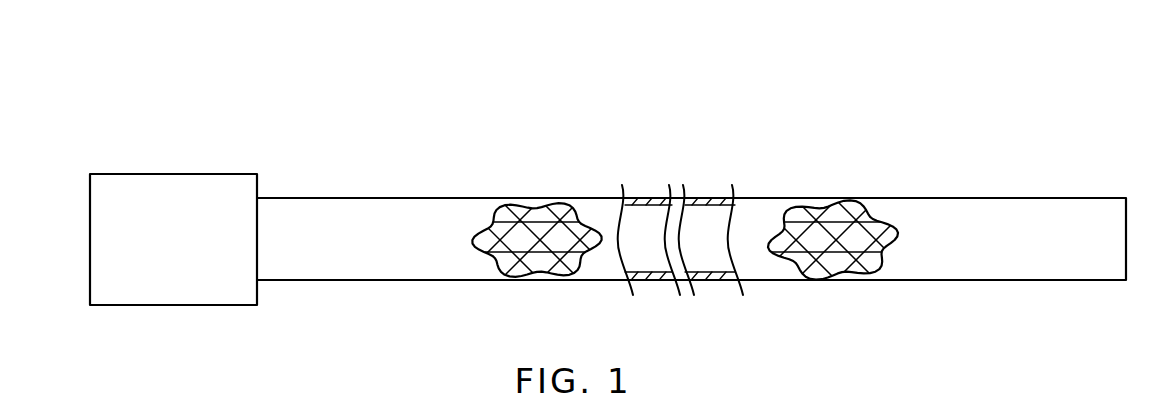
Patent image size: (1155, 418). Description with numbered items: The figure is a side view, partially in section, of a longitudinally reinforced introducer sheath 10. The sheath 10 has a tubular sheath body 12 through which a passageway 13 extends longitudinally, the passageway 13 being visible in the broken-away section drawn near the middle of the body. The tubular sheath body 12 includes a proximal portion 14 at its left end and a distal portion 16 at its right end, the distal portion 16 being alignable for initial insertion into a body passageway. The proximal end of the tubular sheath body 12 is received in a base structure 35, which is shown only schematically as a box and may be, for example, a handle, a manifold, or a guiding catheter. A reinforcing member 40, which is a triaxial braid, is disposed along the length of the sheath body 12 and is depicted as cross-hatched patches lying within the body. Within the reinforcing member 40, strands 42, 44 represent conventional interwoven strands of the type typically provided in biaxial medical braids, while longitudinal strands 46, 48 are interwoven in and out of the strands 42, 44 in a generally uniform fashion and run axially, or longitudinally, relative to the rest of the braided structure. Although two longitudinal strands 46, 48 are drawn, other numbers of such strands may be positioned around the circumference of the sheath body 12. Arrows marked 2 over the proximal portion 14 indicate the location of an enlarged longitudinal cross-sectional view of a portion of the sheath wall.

The longitudinal sheath 10 is at (608, 115).
The tubular sheath body 12 is at (952, 210).
The passageway 13 is at (698, 245).
The proximal portion 14 is at (300, 198).
The distal portion 16 is at (1037, 198).
The base structure 35 is at (183, 190).
The reinforcing member 40 is at (517, 265).
The strand 42 is at (508, 210).
The strand 44 is at (521, 213).
The longitudinal strand 46 is at (548, 218).
The longitudinal strand 48 is at (548, 265).
The section line 2- 2 is at (439, 185).